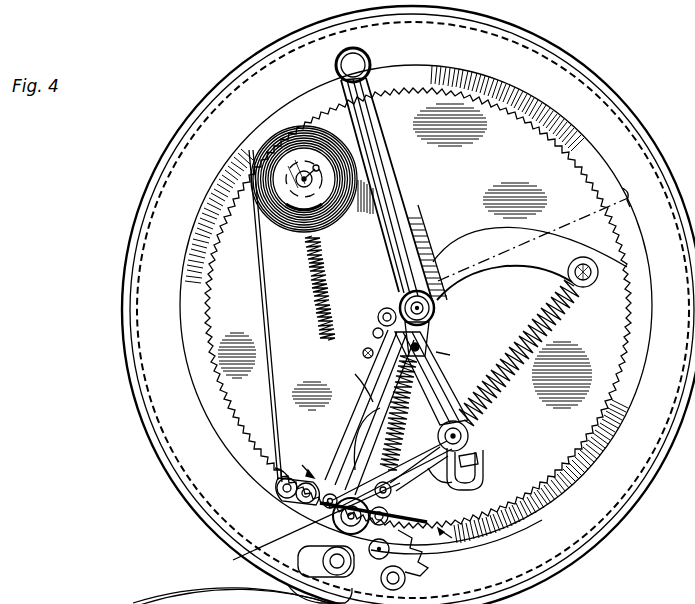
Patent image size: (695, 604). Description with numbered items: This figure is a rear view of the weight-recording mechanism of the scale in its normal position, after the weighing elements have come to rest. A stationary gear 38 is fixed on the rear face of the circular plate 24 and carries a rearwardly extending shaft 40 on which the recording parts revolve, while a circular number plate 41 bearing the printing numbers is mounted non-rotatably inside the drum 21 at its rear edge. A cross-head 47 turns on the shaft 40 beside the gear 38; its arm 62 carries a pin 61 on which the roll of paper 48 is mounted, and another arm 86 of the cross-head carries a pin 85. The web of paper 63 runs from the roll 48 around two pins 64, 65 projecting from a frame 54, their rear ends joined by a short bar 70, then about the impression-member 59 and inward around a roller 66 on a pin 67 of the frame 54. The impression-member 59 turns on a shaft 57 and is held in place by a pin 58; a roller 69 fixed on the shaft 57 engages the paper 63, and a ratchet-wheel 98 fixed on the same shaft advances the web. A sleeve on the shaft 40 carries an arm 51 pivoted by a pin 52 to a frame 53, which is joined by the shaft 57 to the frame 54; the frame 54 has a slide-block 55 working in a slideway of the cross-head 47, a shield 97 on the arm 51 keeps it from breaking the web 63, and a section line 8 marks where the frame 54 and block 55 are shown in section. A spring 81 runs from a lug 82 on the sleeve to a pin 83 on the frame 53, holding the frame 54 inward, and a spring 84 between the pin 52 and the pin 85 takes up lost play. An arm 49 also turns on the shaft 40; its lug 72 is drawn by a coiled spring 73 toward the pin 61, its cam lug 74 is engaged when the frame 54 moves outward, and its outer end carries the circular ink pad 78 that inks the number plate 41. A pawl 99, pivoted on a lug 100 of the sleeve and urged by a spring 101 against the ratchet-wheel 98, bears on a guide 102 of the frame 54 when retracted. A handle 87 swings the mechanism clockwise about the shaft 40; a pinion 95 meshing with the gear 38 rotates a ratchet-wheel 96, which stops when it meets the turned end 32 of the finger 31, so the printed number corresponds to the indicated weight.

The drum 21 is at (131, 371).
The circular number plate 41 is at (148, 268).
The plate 24 is at (645, 262).
The stationary gear 38 is at (613, 322).
The roll of paper 48 is at (285, 142).
The pin 61 is at (296, 176).
The handle 87 is at (374, 93).
The arm 62 is at (368, 214).
The shaft 40 is at (433, 262).
The arm 86 is at (477, 254).
The finger 31 is at (570, 232).
The turned end 32 is at (628, 190).
The pin 85 is at (585, 259).
The spring 84 is at (503, 388).
The lug 100 is at (402, 302).
The arm 51 is at (430, 344).
The lug 82 is at (380, 312).
The spring 101 is at (375, 331).
The lug 72 is at (364, 356).
The coiled spring 73 is at (312, 307).
The web of paper 63 is at (256, 305).
The pawl 99 is at (358, 382).
The spring 81 is at (385, 398).
The guide 102 is at (376, 410).
The cross-head 47 is at (370, 432).
The frame 54 is at (328, 478).
The arm 49 is at (437, 386).
The roller 69 is at (450, 354).
The pin 52 is at (469, 437).
The shield 97 is at (485, 473).
The frame 53 is at (437, 477).
The pin 83 is at (442, 469).
The slide-block 55 is at (410, 443).
The roller 66 is at (391, 491).
The pin 67 is at (410, 518).
The section line 8 is at (380, 498).
The pin 65 is at (277, 467).
The pin 64 is at (278, 488).
The short bar 70 is at (297, 500).
The pin 58 is at (329, 516).
The impression-member 59 is at (323, 517).
The shaft 57 is at (345, 530).
The cam lug 74 is at (300, 561).
The ink pad 78 is at (307, 590).
The ratchet-wheel 98 is at (369, 551).
The pinion 95 is at (420, 556).
The ratchet-wheel 96 is at (405, 565).